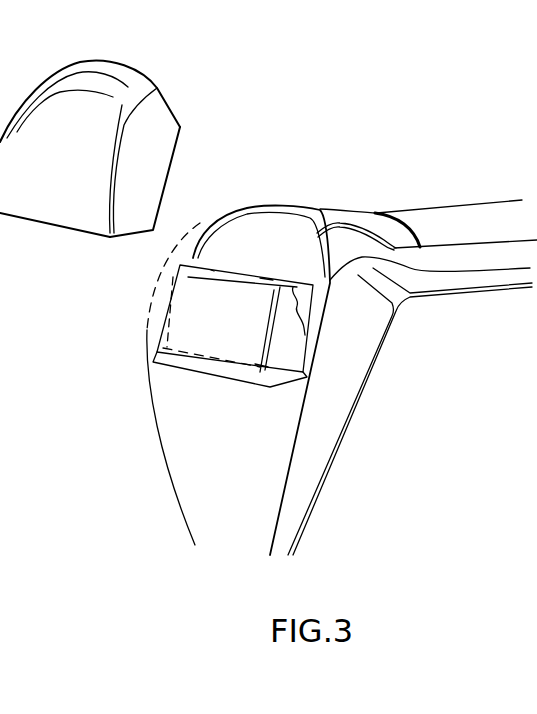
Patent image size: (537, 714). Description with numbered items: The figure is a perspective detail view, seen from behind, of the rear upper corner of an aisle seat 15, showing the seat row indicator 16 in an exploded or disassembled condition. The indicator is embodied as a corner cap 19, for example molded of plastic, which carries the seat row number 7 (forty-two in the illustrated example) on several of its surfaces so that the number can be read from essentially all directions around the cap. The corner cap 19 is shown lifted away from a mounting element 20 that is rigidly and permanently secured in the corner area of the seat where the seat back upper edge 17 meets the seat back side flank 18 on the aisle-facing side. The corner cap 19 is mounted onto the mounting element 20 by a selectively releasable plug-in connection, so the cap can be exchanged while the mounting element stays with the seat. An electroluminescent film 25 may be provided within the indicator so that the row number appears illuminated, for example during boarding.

The seat row number 7 is at (43, 194).
The aisle seat 15 is at (470, 461).
The seat row indicator 16 is at (108, 49).
The seat back upper edge 17 is at (479, 216).
The seat back side flank 18 is at (198, 492).
The corner cap 19 is at (164, 114).
The mounting element 20 is at (178, 316).
The electroluminescent film 25 is at (310, 333).